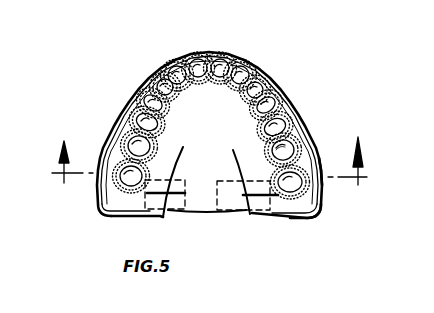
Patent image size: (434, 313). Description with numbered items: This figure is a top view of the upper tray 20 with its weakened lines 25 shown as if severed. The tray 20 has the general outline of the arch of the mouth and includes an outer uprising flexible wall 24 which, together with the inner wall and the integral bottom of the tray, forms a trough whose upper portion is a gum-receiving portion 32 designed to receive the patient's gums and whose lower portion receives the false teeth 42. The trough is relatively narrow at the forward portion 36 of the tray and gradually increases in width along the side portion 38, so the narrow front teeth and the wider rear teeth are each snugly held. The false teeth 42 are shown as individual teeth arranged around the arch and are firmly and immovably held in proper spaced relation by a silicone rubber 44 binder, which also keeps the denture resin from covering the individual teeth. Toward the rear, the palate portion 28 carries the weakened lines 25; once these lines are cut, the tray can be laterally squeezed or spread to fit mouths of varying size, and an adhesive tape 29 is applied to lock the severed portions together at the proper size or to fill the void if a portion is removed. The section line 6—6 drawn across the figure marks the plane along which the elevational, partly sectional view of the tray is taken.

The upper tray 20 is at (291, 102).
The outer uprising flexible wall 24 is at (276, 86).
The forward portion of the tray 36 is at (216, 52).
The false teeth 42 is at (245, 98).
The silicone rubber 44 is at (293, 140).
The side portion of the tray 38 is at (316, 162).
The palate portion 28 is at (178, 189).
The adhesive tape 29 is at (236, 170).
The weakened lines 25 is at (164, 217).
The gum-receiving portion 32 is at (307, 216).
The section line 6— 6 is at (210, 163).